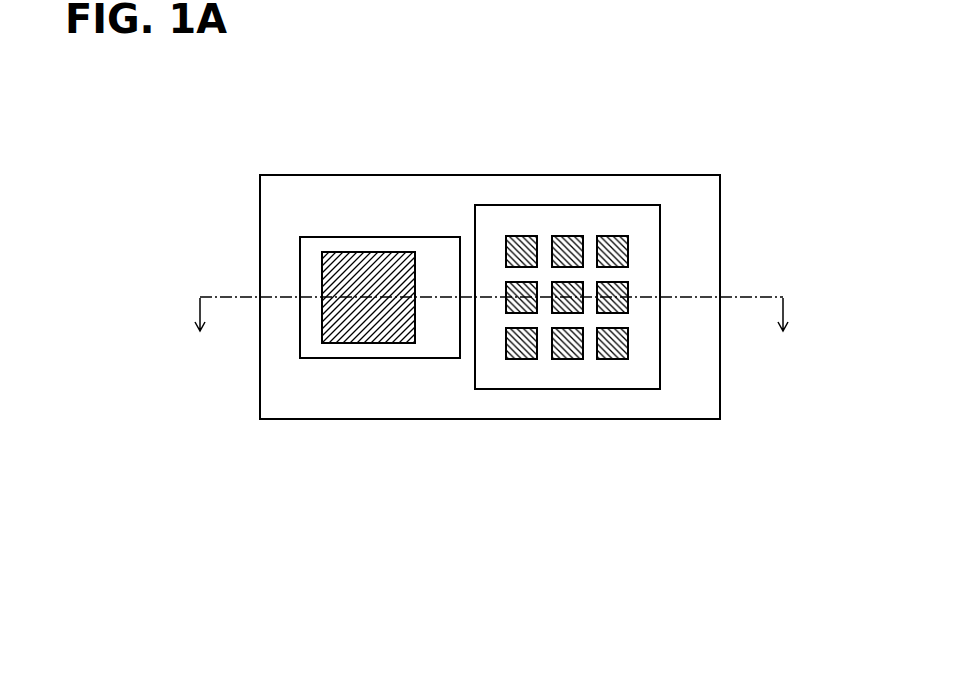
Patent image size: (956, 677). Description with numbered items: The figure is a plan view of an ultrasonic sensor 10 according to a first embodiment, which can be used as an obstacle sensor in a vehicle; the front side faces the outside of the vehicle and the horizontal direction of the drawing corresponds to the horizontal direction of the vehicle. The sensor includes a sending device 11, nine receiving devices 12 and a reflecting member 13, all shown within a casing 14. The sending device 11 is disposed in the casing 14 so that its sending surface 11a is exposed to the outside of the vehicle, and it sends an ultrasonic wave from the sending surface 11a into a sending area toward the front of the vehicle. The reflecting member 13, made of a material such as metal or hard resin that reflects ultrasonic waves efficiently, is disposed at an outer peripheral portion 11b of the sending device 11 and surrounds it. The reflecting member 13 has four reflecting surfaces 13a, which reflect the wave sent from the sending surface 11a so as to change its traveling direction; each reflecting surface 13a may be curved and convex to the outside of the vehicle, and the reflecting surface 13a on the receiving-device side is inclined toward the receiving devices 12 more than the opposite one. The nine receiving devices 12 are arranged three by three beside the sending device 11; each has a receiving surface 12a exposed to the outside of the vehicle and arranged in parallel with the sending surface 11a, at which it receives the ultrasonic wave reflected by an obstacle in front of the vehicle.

The ultrasonic sensor 10 is at (670, 147).
The sending device 11 is at (323, 294).
The sending surface 11a is at (347, 255).
The outer peripheral portion 11b is at (323, 318).
The receiving device 12 is at (568, 360).
The receiving surface 12a is at (578, 358).
The reflecting member 13 is at (428, 237).
The reflecting surface 13a is at (383, 245).
The casing 14 is at (722, 358).